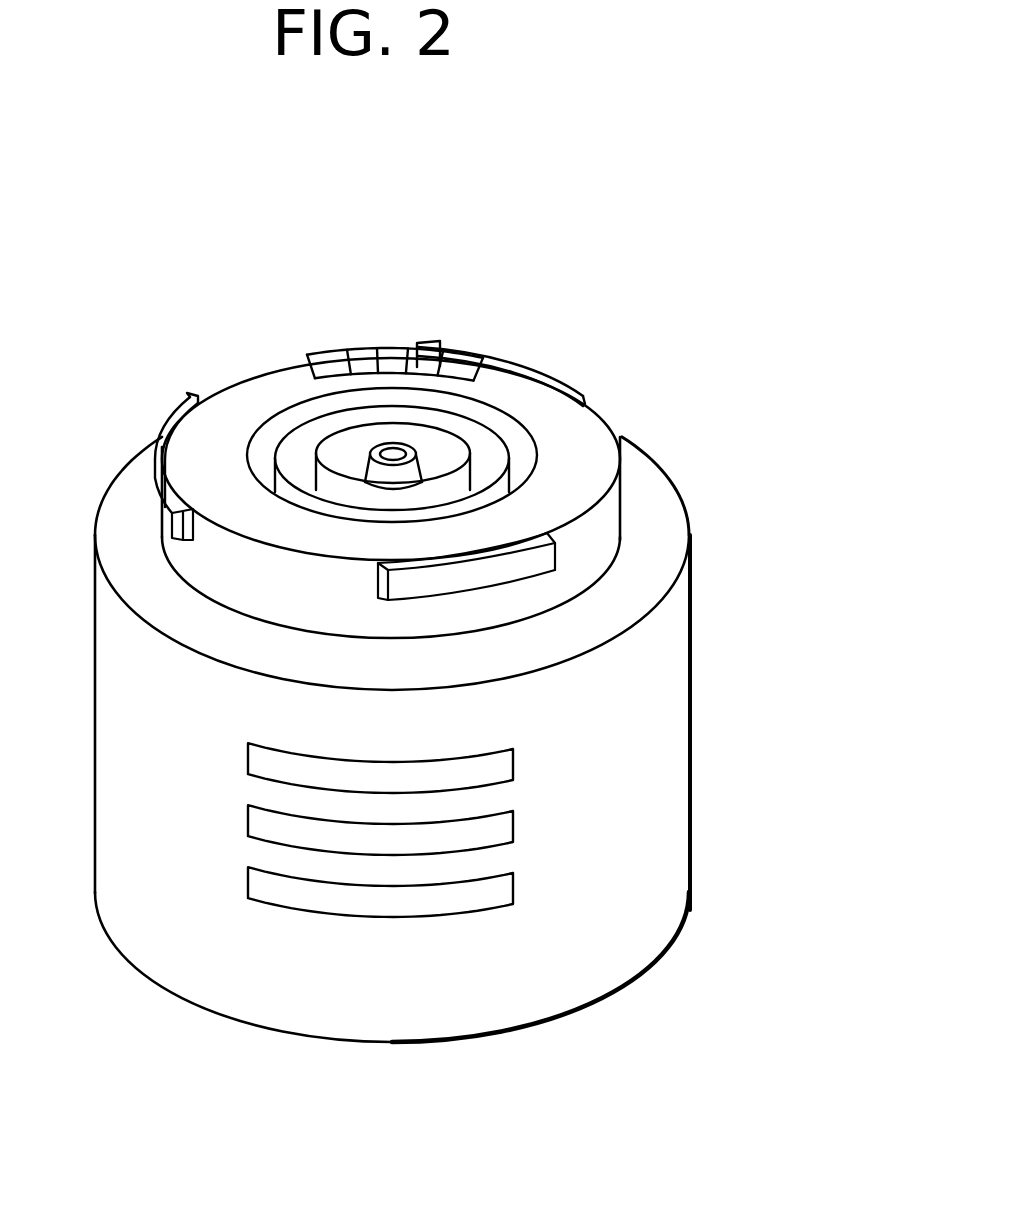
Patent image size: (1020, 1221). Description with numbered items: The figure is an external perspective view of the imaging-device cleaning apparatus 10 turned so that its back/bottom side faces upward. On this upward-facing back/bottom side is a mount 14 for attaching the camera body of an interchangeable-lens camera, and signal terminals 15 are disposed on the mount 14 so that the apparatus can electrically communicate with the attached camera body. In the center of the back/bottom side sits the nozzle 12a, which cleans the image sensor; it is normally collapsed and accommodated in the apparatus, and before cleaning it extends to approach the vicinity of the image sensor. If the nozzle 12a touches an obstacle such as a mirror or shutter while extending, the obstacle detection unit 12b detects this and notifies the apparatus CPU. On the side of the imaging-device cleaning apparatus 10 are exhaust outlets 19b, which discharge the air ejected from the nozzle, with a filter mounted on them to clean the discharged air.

The imaging-device cleaning apparatus 10 is at (690, 728).
The nozzle 12a is at (458, 483).
The obstacle detection unit 12b is at (372, 445).
The mount 14 is at (543, 367).
The signal terminals 15 is at (433, 360).
The exhaust outlet 19b is at (510, 857).